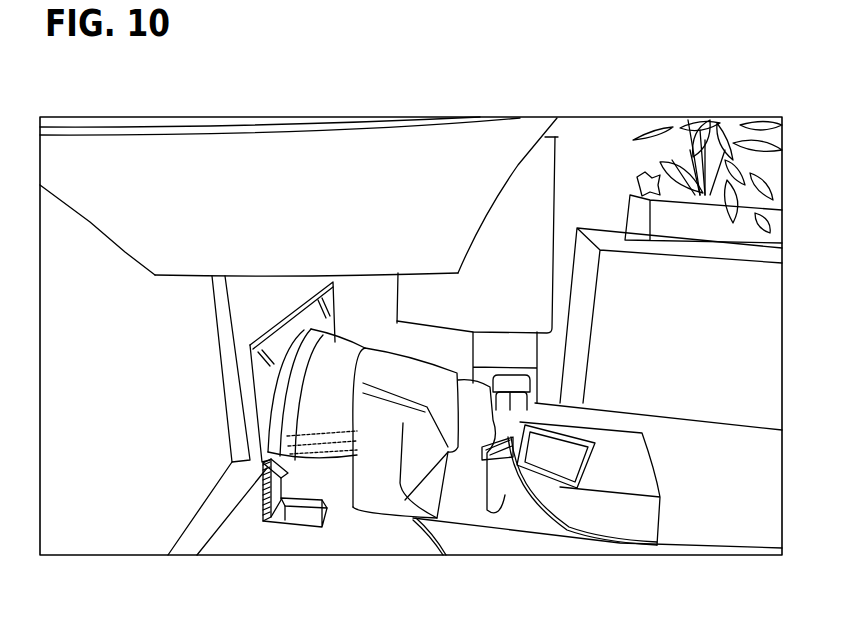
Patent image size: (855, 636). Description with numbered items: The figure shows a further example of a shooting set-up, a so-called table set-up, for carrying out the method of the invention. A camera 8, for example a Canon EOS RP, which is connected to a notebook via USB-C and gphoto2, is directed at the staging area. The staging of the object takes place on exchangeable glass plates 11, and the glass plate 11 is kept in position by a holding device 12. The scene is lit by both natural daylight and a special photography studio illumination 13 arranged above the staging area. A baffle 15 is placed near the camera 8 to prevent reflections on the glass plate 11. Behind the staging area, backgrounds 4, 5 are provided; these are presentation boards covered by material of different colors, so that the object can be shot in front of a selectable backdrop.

The background 4 is at (103, 522).
The background 5 is at (545, 197).
The camera 8 is at (485, 440).
The glass plate 11 is at (262, 462).
The holding device 12 is at (307, 520).
The photography studio illumination 13 is at (313, 180).
The baffle 15 is at (335, 440).